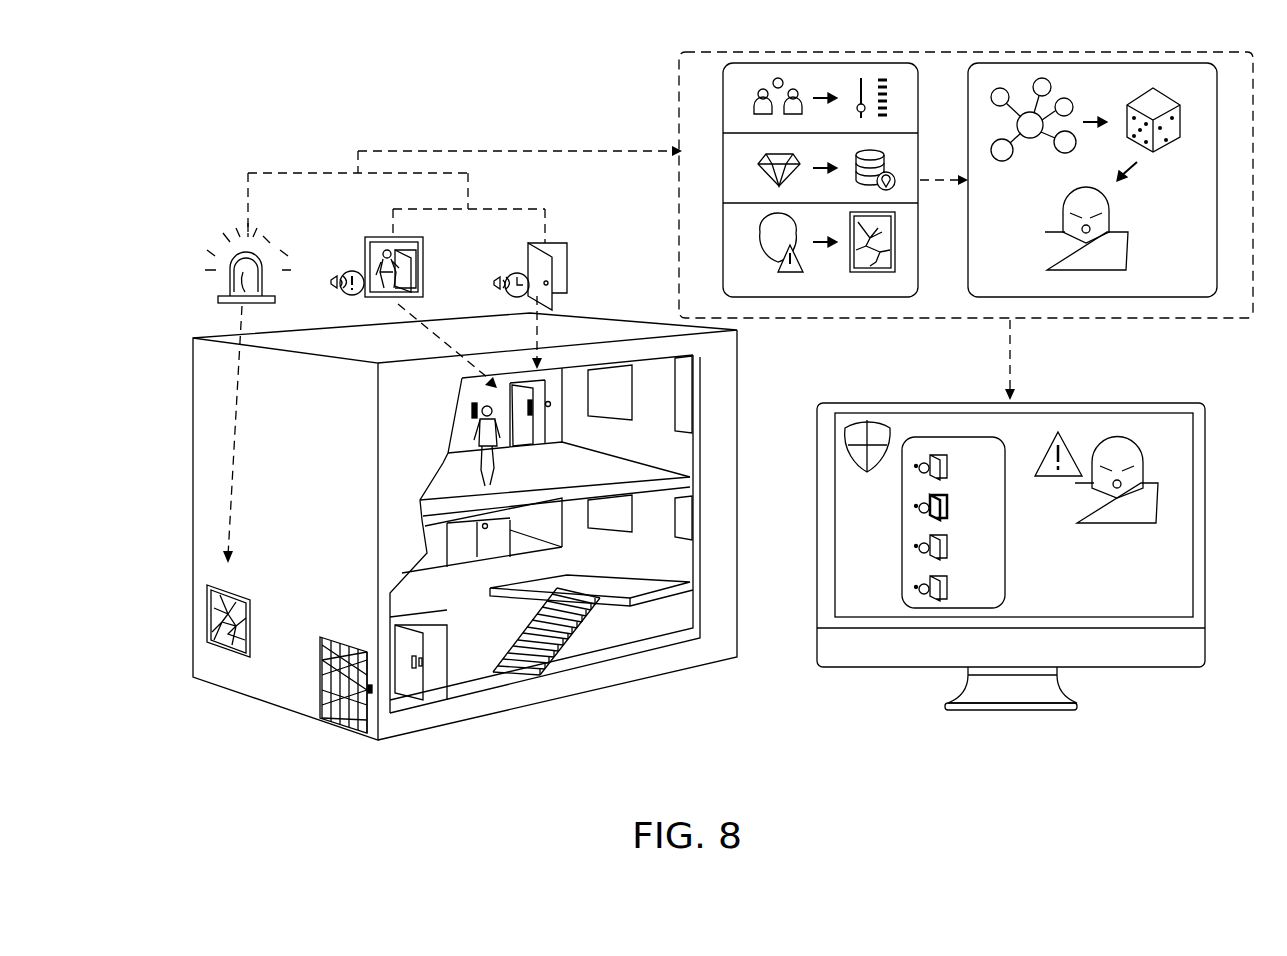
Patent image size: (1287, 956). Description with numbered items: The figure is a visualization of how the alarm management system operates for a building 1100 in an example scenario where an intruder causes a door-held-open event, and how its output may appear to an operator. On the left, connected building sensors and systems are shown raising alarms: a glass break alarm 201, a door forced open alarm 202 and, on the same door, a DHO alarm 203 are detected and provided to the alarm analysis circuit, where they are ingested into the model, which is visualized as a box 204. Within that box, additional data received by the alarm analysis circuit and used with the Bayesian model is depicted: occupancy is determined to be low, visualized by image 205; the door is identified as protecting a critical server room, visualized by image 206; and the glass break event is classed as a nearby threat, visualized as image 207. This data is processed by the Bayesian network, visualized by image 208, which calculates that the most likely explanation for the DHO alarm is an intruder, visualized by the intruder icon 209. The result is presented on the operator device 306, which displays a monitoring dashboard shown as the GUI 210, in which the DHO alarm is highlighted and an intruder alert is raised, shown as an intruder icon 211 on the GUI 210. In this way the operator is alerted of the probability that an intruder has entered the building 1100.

The glass break alarm 201 is at (212, 256).
The door forced open (DFO) alarm 202 is at (393, 236).
The DHO alarm 203 is at (551, 243).
The box 204 is at (707, 50).
The image 205 is at (733, 117).
The image 206 is at (733, 158).
The image 207 is at (740, 278).
The image 208 is at (1040, 78).
The intruder icon 209 is at (1070, 270).
The GUI 210 is at (915, 503).
The intruder icon 211 is at (1178, 518).
The operator device 306 is at (1193, 645).
The building 1100 is at (203, 418).